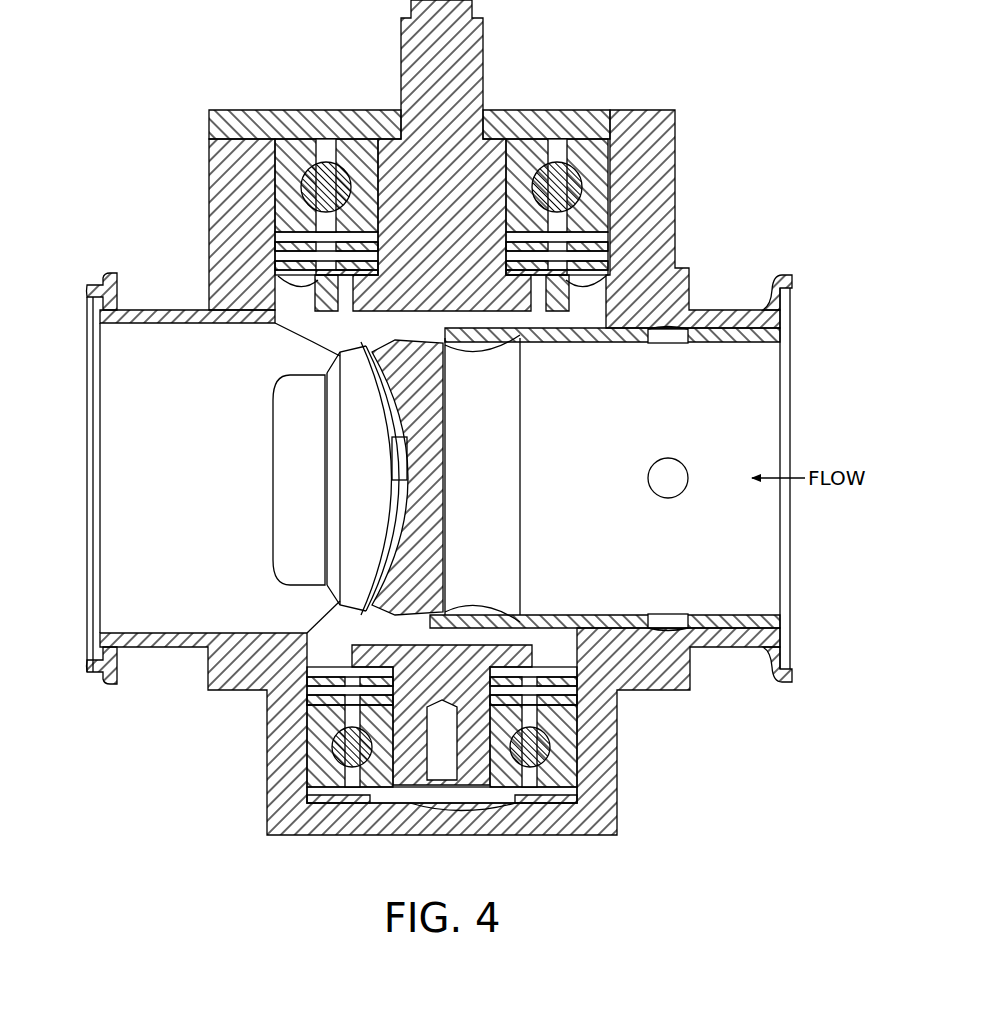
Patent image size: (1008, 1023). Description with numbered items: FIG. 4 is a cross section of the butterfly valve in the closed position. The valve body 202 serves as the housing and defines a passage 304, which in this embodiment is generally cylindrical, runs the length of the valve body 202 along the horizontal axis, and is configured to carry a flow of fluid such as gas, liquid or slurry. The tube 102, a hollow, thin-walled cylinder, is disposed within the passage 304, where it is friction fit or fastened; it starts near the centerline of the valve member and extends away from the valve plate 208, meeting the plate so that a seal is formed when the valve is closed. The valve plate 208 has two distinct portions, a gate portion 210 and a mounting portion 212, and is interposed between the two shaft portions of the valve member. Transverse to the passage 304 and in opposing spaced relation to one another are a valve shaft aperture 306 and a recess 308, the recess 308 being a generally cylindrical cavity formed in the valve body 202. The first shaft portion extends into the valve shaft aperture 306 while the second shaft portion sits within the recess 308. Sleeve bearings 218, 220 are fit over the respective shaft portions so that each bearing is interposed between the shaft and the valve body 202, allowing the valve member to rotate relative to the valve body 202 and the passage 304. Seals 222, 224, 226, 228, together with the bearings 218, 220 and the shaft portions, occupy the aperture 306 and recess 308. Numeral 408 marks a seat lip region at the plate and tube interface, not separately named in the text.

The tube 102 is at (763, 375).
The valve body 202 is at (170, 310).
The valve plate 208 is at (422, 567).
The gate portion 210 is at (393, 425).
The mounting portion 212 is at (446, 410).
The sleeve bearing 218 is at (600, 178).
The sleeve bearing 220 is at (577, 750).
The seal 222 is at (605, 240).
The seal 224 is at (600, 262).
The seal 226 is at (577, 677).
The seal 228 is at (577, 695).
The passage 304 is at (750, 406).
The valve shaft aperture 306 is at (590, 110).
The recess 308 is at (410, 768).
The seat lip 408 is at (445, 348).